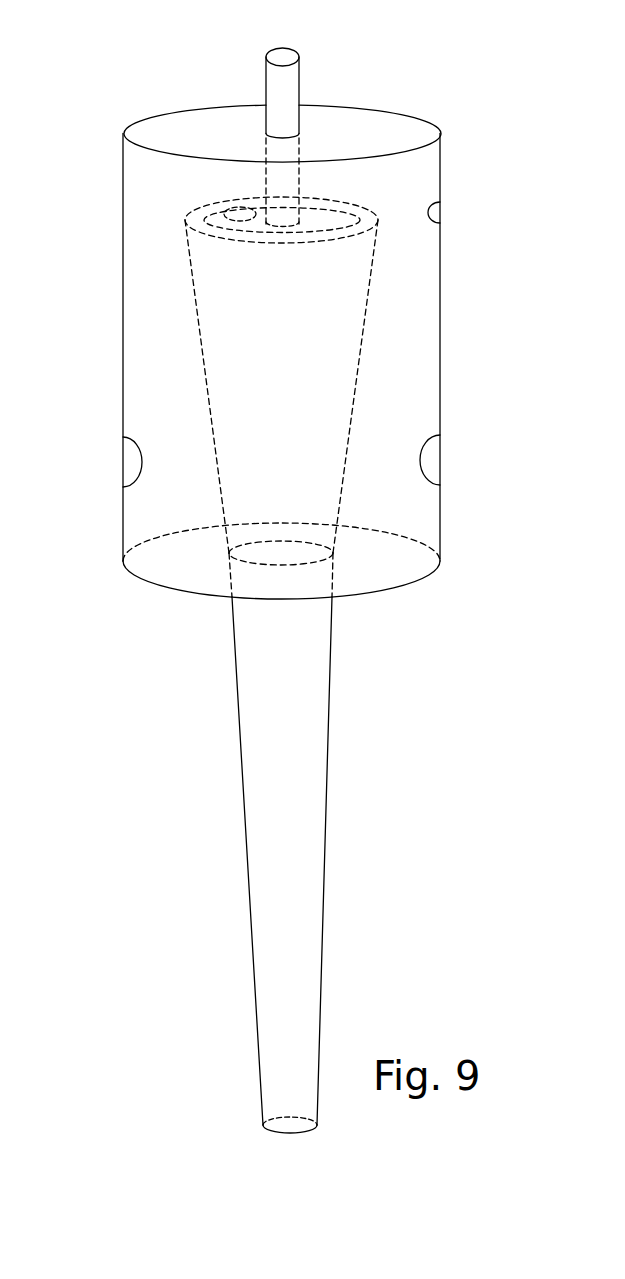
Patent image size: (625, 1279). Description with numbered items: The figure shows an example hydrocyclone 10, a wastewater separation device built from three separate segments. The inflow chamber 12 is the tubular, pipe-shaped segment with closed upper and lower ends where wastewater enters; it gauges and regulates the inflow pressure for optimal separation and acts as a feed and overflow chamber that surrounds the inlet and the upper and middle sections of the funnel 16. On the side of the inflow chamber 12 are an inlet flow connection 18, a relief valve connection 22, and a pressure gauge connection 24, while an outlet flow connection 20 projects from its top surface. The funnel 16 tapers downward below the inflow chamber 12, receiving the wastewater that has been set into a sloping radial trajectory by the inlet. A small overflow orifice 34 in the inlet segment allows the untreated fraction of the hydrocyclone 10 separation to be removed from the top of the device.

The hydrocyclone 10 is at (499, 57).
The inflow chamber 12 is at (440, 341).
The funnel 16 is at (300, 872).
The inlet flow connection 18 is at (134, 463).
The outlet flow connection 20 is at (287, 95).
The relief valve connection 22 is at (432, 470).
The pressure gauge connection 24 is at (436, 213).
The overflow orifice 34 is at (298, 227).